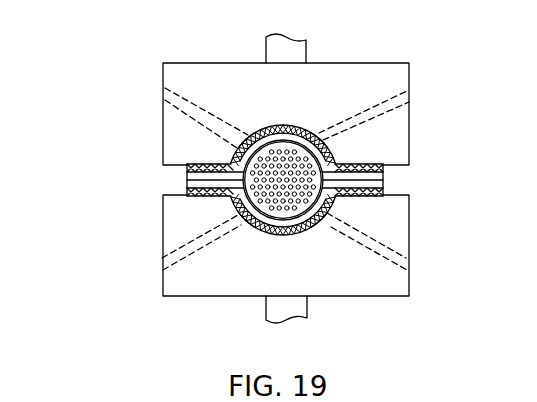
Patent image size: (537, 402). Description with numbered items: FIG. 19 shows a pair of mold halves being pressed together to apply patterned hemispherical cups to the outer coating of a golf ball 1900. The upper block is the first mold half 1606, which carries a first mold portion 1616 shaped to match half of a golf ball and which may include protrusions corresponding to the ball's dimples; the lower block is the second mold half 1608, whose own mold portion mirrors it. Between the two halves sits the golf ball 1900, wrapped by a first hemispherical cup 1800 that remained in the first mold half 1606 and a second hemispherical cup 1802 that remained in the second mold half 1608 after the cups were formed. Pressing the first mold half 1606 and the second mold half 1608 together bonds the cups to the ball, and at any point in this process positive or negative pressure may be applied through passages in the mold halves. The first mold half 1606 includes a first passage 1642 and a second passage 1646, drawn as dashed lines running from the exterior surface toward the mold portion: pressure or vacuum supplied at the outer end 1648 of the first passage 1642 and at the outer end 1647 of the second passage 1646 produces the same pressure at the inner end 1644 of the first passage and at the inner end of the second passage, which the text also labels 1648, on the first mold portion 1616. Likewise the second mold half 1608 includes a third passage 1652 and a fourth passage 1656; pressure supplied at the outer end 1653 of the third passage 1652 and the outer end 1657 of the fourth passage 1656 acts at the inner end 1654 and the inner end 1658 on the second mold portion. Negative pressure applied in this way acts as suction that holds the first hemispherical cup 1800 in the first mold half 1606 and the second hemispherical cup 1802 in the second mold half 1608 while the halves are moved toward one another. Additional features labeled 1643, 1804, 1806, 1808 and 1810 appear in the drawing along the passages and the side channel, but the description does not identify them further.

The first mold half 1606 is at (327, 77).
The second mold half 1608 is at (347, 287).
The first mold portion 1616 is at (283, 125).
The first passage 1642 is at (203, 109).
The upper-left inner passage line 1643 is at (167, 92).
The inner end of first passage 1644 is at (247, 135).
The second passage 1646 is at (382, 113).
The outer end of second passage 1647 is at (402, 93).
The outer end of first passage 1648 is at (326, 138).
The third passage 1652 is at (195, 253).
The outer end of third passage 1653 is at (163, 265).
The inner end of third passage 1654 is at (242, 217).
The fourth passage 1656 is at (373, 239).
The outer end of fourth passage 1657 is at (405, 268).
The inner end of fourth passage 1658 is at (338, 228).
The first hemispherical cup 1800 is at (179, 169).
The second hemispherical cup 1802 is at (176, 190).
The right upper wall 1804 is at (384, 170).
The right upper channel edge 1806 is at (384, 176).
The right channel center line 1808 is at (384, 180).
The right lower wall 1810 is at (384, 189).
The golf ball 1900 is at (297, 200).